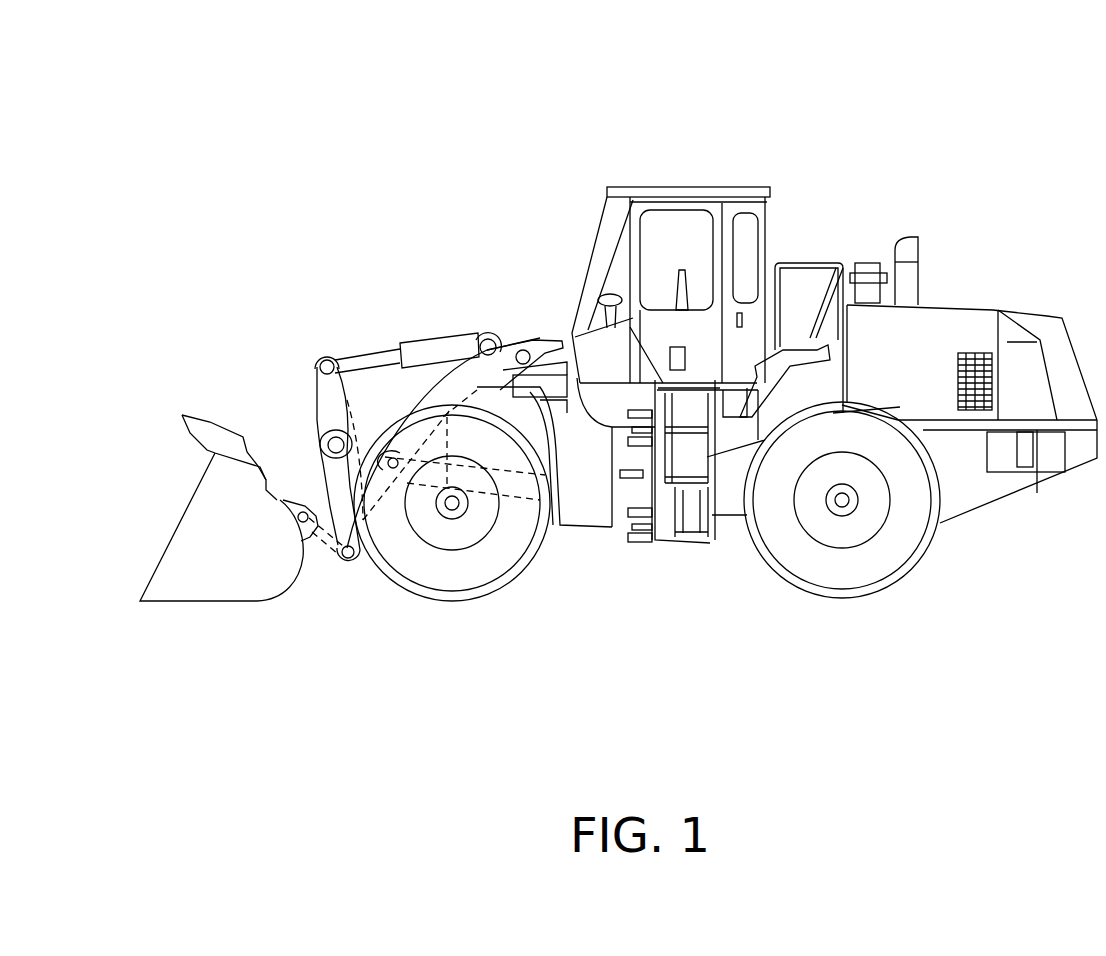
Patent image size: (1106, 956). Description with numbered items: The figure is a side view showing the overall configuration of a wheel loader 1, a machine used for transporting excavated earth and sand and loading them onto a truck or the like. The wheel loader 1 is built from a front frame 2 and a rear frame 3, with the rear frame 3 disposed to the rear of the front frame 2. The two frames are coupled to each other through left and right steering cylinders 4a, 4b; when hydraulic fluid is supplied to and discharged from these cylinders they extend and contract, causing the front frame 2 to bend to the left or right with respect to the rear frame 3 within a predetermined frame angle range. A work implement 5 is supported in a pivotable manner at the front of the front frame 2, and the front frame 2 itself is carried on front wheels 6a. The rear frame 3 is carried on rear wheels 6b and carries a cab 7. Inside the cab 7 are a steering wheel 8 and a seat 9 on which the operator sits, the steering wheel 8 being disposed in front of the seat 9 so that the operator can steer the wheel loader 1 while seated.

The wheel loader 1 is at (898, 98).
The front frame 2 is at (567, 520).
The rear frame 3 is at (737, 532).
The steering cylinder 4a is at (637, 477).
The steering cylinder 4b is at (636, 506).
The work implement 5 is at (200, 382).
The front wheels 6a is at (465, 580).
The rear wheels 6b is at (853, 582).
The cab 7 is at (735, 187).
The steering wheel 8 is at (603, 302).
The seat 9 is at (682, 270).